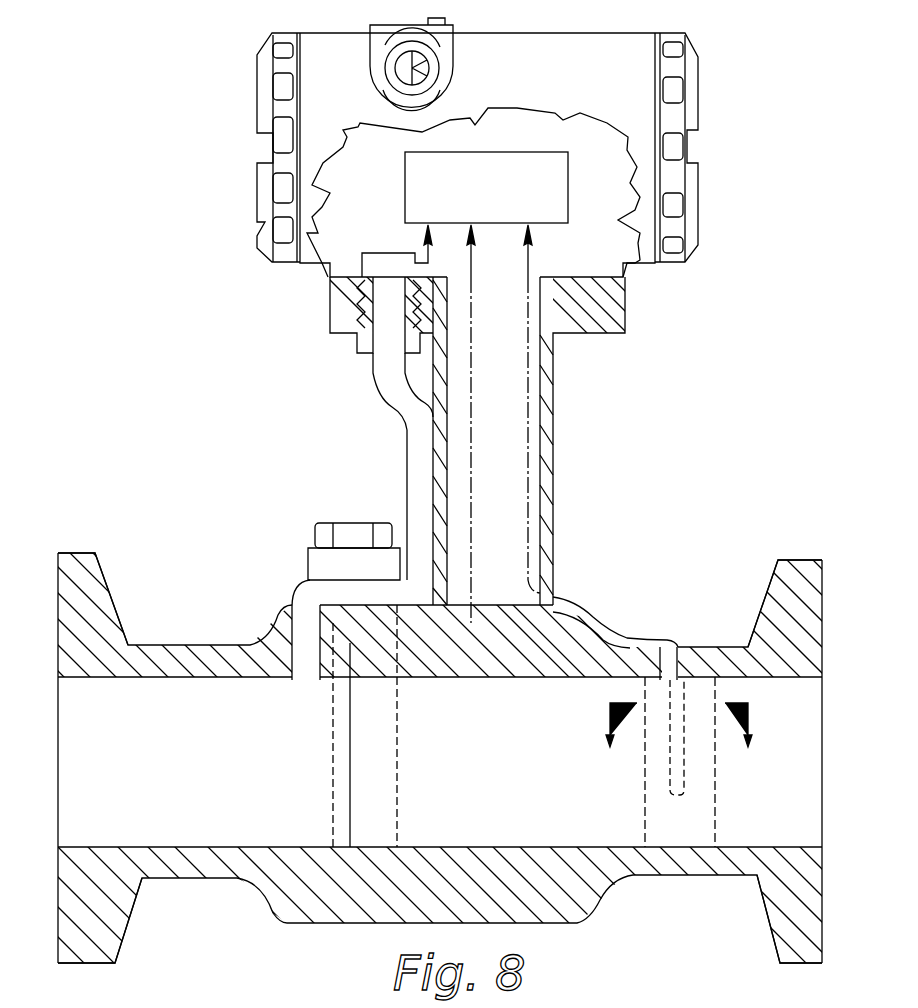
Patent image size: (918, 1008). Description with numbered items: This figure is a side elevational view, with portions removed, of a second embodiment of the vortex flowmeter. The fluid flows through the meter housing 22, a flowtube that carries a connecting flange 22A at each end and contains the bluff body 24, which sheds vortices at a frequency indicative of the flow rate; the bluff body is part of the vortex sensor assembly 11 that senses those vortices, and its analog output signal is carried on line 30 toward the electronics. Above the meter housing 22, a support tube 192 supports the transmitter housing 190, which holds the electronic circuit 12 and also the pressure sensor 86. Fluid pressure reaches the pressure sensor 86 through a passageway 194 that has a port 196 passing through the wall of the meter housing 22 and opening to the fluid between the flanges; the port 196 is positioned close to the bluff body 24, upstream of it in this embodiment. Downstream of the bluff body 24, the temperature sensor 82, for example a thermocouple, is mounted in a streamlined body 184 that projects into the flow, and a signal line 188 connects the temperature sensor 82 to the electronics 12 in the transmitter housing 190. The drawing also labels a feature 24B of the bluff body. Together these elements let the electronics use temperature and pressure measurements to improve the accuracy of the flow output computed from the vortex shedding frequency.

The transmitter housing 190 is at (578, 33).
The electronic circuit 12 is at (568, 181).
The pressure sensor 86 is at (372, 253).
The passageway 194 is at (383, 400).
The line 30 is at (473, 412).
The support tube 192 is at (553, 445).
The meter housing 22 is at (647, 583).
The connecting flange 22A is at (58, 607).
The signal line 188 is at (573, 595).
The port 196 is at (295, 683).
The vortex sensor assembly 11 is at (421, 663).
The bluff body 24 is at (398, 785).
The shedder bar edge 24B is at (333, 800).
The streamlined body 184 is at (715, 770).
The temperature sensor 82 is at (690, 703).